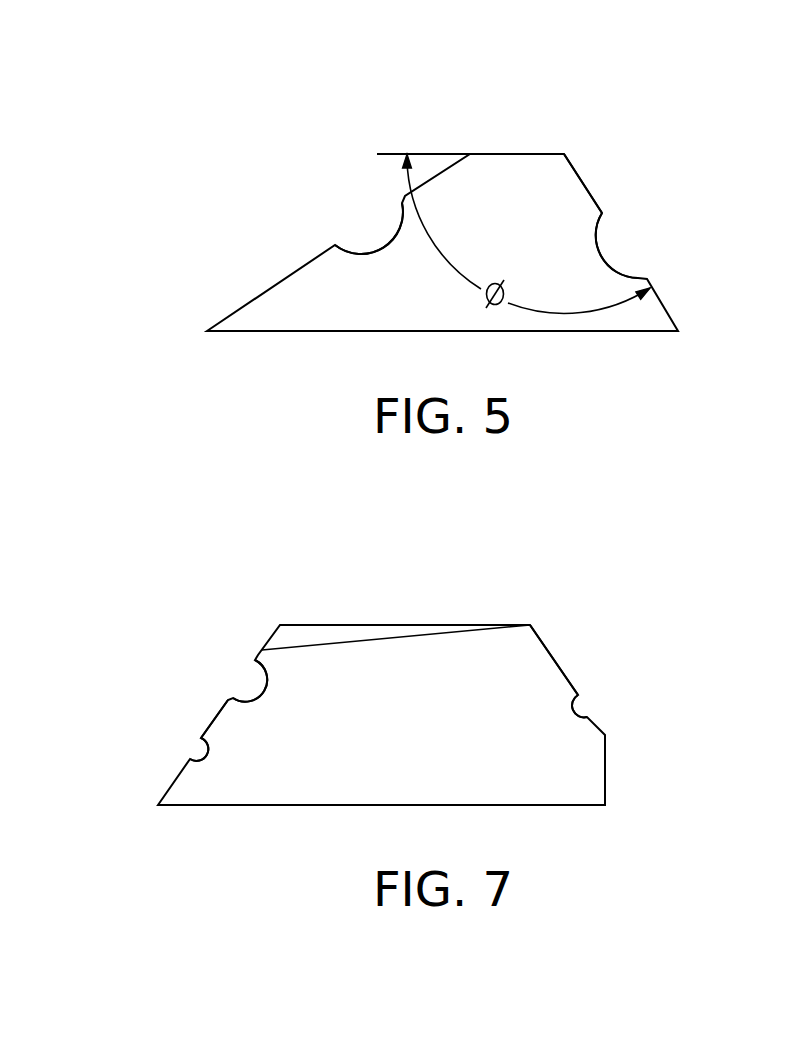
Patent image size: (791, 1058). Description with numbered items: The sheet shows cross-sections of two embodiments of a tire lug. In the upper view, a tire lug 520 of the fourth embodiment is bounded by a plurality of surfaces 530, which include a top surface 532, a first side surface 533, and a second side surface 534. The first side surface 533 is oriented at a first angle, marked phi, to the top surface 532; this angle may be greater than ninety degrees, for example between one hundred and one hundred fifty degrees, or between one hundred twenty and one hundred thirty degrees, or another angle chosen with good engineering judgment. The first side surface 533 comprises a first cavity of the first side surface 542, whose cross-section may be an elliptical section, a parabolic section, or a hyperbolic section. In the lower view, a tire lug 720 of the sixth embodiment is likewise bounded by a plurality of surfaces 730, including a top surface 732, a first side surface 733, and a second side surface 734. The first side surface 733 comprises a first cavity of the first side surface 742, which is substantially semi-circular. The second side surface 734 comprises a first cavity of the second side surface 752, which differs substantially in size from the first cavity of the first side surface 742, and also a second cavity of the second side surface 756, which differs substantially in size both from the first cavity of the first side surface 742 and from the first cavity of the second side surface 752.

In FIG. 5, the tire lug 520 is at (600, 140).
In FIG. 5, the plurality of surfaces 530 is at (487, 137).
In FIG. 5, the top surface 532 is at (543, 154).
In FIG. 5, the first side surface 533 is at (588, 187).
In FIG. 5, the second side surface 534 is at (308, 260).
In FIG. 5, the first cavity of the first side surface 542 is at (625, 243).
In FIG. 7, the tire lug 720 is at (463, 602).
In FIG. 7, the plurality of surfaces 730 is at (430, 595).
In FIG. 7, the top surface 732 is at (303, 635).
In FIG. 7, the first side surface 733 is at (555, 658).
In FIG. 7, the second side surface 734 is at (207, 728).
In FIG. 7, the first cavity of the first side surface 742 is at (583, 705).
In FIG. 7, the first cavity of the second side surface 752 is at (247, 682).
In FIG. 7, the second cavity of the second side surface 756 is at (188, 748).